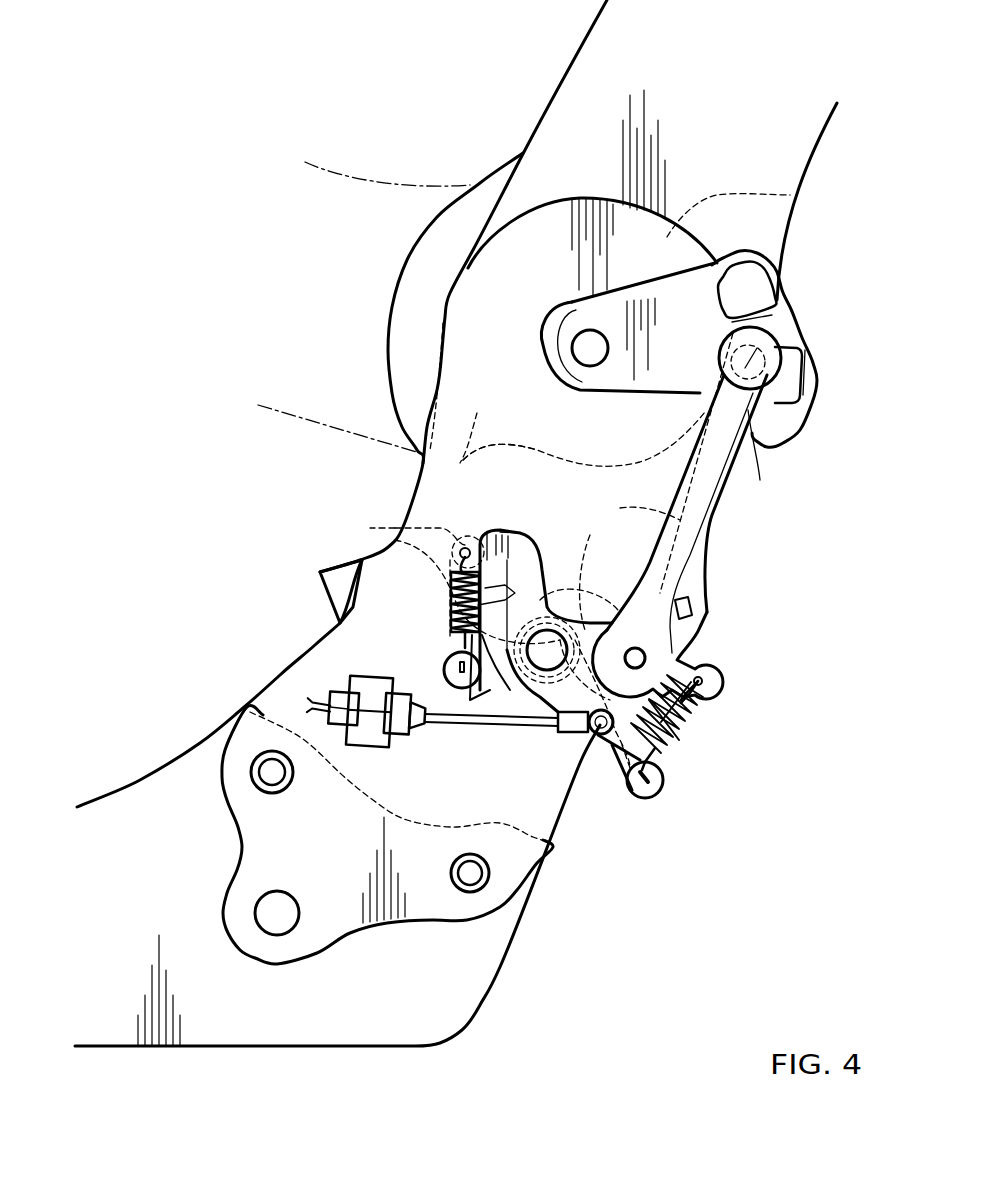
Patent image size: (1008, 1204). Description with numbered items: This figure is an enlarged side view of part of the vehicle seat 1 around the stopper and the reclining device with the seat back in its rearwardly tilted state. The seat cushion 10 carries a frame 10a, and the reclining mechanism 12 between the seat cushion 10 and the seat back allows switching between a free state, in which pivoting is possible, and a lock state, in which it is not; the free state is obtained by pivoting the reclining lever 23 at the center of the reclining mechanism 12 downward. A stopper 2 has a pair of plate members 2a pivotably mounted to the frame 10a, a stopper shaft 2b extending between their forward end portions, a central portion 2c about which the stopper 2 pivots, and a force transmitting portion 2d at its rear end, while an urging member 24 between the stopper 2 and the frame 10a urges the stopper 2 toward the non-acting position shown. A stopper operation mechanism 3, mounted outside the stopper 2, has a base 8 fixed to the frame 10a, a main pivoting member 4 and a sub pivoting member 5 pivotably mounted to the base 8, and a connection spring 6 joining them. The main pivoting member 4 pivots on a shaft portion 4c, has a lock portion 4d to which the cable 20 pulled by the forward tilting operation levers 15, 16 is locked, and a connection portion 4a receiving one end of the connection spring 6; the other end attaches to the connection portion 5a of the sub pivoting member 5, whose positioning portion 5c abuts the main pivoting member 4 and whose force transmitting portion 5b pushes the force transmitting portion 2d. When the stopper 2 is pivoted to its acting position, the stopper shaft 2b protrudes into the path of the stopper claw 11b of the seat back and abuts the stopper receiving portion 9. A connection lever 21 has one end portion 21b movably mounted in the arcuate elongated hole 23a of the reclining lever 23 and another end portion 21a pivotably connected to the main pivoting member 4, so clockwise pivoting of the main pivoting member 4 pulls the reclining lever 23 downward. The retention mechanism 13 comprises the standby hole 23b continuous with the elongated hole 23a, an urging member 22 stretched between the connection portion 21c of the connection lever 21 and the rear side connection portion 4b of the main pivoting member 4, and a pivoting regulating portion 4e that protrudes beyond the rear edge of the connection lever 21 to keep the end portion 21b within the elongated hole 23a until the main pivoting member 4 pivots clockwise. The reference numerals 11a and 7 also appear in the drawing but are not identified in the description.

The vehicle seat 1 is at (494, 52).
The frame member 11a is at (348, 190).
The stopper claw 11b is at (467, 470).
The reclining mechanism 12 is at (790, 195).
The reclining lever 23 is at (795, 307).
The arcuate elongated hole 23a is at (748, 290).
The standby hole 23b is at (793, 362).
The retention mechanism 13 is at (825, 409).
The connection lever 21 is at (725, 523).
The other end portion of connection lever 21a is at (641, 656).
The one end portion of connection lever 21b is at (748, 410).
The connection portion 21c is at (712, 676).
The stopper receiving portion 9 is at (645, 504).
The stopper operation mechanism 3 is at (731, 697).
The main pivoting member 4 is at (617, 792).
The connection portion 4a is at (517, 548).
The rear side connection portion 4b is at (652, 790).
The shaft portion 4c is at (542, 720).
The lock portion 4d is at (598, 736).
The pivoting regulating portion 4e is at (688, 612).
The stopper 2 is at (451, 516).
The plate members 2a is at (470, 535).
The stopper shaft 2b is at (395, 528).
The central portion 2c is at (550, 620).
The force transmitting portion 2d is at (632, 775).
The urging member 24 is at (594, 569).
The base 8 is at (333, 590).
The connection spring 6 is at (441, 601).
The sub pivoting member 5 is at (470, 703).
The connection portion 5a is at (453, 682).
The force transmitting portion 5b is at (657, 715).
The positioning portion 5c is at (470, 604).
The link 7 is at (496, 720).
The urging member 22 is at (665, 742).
The cable 20 is at (433, 728).
The forward tilting operation lever 15 is at (270, 700).
The forward tilting operation lever 16 is at (285, 691).
The frame 10a is at (458, 964).
The seat cushion 10 is at (357, 885).